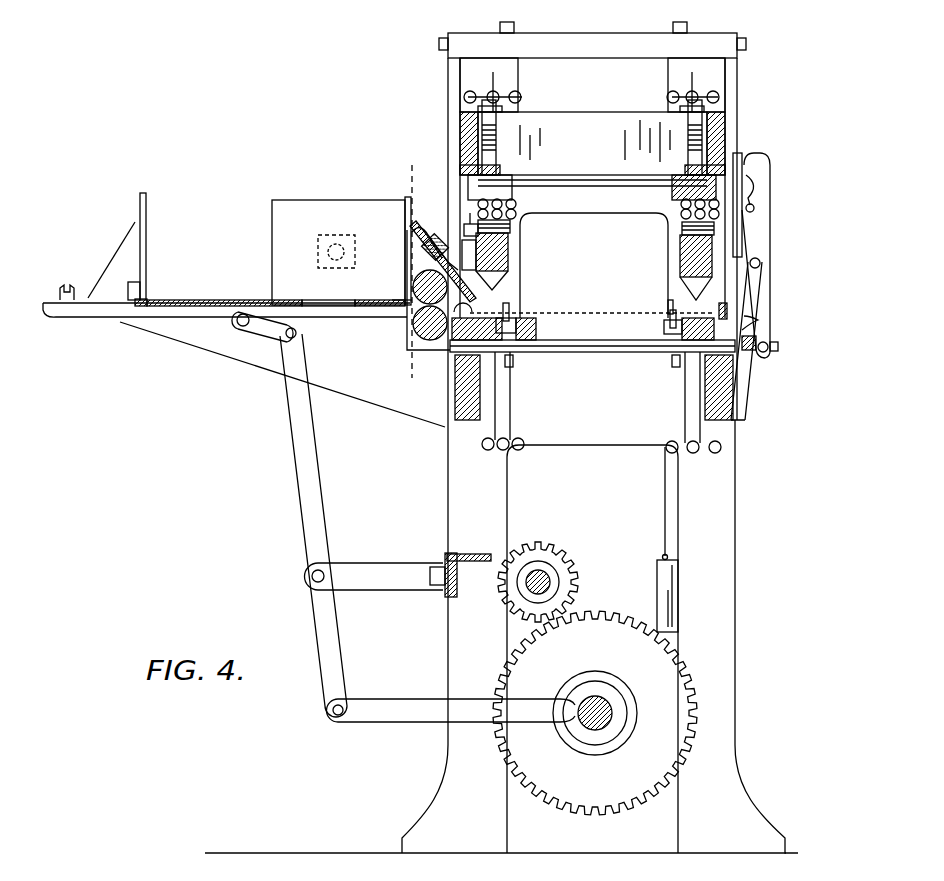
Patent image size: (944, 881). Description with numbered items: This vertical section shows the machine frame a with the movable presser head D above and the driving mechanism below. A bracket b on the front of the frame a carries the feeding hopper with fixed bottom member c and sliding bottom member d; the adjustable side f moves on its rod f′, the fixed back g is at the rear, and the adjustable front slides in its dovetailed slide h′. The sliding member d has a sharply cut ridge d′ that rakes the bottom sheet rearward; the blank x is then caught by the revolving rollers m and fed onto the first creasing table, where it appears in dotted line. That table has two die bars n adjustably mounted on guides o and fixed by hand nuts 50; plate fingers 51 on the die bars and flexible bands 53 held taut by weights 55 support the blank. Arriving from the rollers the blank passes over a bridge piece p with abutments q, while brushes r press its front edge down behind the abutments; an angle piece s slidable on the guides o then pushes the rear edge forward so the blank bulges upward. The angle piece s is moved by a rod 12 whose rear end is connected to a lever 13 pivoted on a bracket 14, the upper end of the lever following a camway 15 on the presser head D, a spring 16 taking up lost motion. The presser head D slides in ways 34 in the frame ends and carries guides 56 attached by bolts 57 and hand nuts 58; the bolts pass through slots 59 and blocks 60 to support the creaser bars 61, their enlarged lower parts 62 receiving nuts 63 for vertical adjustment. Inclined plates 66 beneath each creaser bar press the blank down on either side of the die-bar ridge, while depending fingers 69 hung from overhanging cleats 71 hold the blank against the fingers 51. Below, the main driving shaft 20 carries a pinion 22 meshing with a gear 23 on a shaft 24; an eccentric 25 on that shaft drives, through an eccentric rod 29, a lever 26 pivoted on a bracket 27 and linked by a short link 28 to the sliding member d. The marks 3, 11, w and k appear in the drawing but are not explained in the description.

The machine frame a is at (595, 38).
The ways 34 is at (463, 75).
The hand nuts 58 is at (464, 97).
The bolts 57 is at (470, 130).
The presser head D is at (592, 143).
The longitudinal slots 59 is at (535, 172).
The blocks 60 is at (512, 192).
The nuts 63 is at (682, 212).
The lower parts of the bolts 62 is at (510, 225).
The creaser bars 61 is at (508, 250).
The inclined plates 66 is at (682, 284).
The overhanging cleats 71 is at (466, 228).
The depending fingers 69 is at (456, 258).
The guides 56 is at (588, 186).
The blank x is at (573, 313).
The stop pin 11 is at (667, 309).
The die bars n is at (510, 318).
The bridge piece p is at (480, 330).
The guides o is at (612, 353).
The rod 12 is at (775, 348).
The washer w is at (513, 362).
The angle piece s is at (719, 308).
The section line 3 is at (564, 281).
The hand nuts 50 is at (508, 426).
The brushes r is at (470, 292).
The abutments q is at (466, 312).
The revolving rollers m is at (413, 322).
The plate fingers 51 is at (412, 282).
The camway 15 is at (762, 165).
The lever 13 is at (764, 324).
The bracket 14 is at (752, 284).
The spring 16 is at (752, 352).
The bands 53 is at (664, 482).
The weights 55 is at (676, 596).
The pinion 22 is at (504, 596).
The main driving shaft 20 is at (550, 580).
The gear 23 is at (656, 663).
The eccentric 25 is at (628, 708).
The shaft 24 is at (582, 700).
The eccentric rod 29 is at (410, 706).
The lever 26 is at (300, 493).
The bracket 27 is at (384, 566).
The short link 28 is at (265, 342).
The bracket b is at (215, 348).
The sliding bottom member d is at (220, 300).
The ridge d′ is at (148, 300).
The fixed bottom member c is at (378, 302).
The guide plate k is at (146, 232).
The dovetailed slide h′ is at (88, 296).
The adjustable side f is at (271, 210).
The rod f′ is at (332, 246).
The fixed back g is at (405, 210).